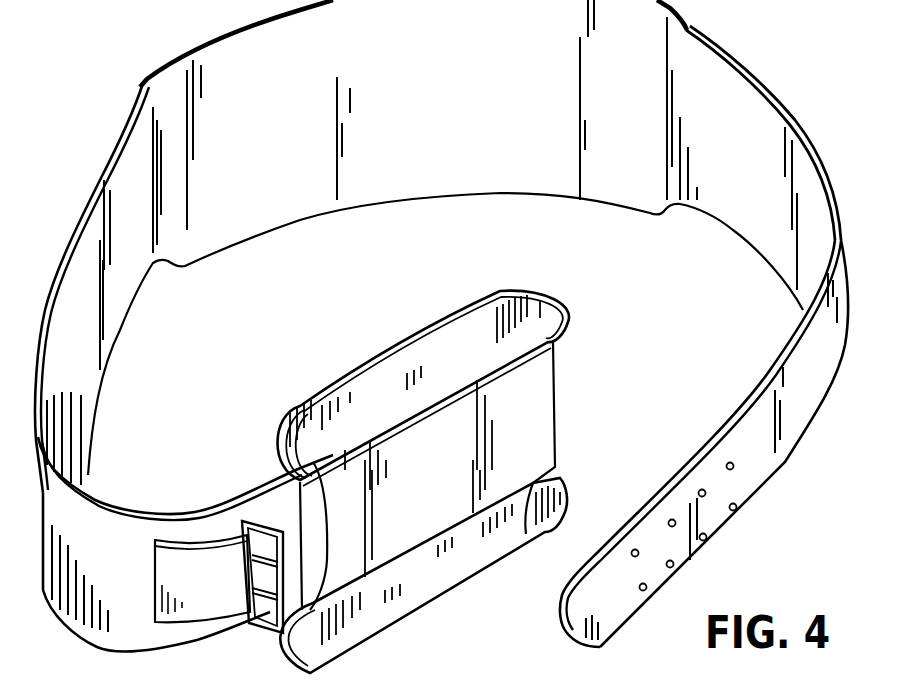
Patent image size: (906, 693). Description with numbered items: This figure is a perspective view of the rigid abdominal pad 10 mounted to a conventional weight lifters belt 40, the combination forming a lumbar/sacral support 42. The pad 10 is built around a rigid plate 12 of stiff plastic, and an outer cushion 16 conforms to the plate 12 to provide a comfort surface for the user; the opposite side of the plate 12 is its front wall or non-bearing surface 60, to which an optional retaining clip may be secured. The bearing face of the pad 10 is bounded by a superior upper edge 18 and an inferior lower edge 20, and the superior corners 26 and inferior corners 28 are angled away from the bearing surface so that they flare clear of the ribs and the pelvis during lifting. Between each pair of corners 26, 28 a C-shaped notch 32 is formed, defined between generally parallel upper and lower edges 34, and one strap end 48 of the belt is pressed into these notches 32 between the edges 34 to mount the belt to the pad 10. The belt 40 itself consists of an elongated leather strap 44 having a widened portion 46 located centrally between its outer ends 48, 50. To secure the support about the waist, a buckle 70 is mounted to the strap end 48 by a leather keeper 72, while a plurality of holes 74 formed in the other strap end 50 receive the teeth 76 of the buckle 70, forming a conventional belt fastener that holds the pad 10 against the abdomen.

The rigid abdominal pad 10 is at (425, 469).
The rigid plate 12 is at (424, 385).
The outer cushion 16 is at (276, 467).
The upper edge 18 is at (477, 300).
The lower edge 20 is at (466, 593).
The superior corners 26 is at (568, 310).
The inferior corners 28 is at (565, 507).
The C-shaped notches 32 is at (526, 535).
The upper and lower edges of notch 34 is at (565, 343).
The weight lifters belt 40 is at (762, 66).
The lumbar/sacral support 42 is at (180, 31).
The leather strap 44 is at (237, 258).
The widened portion 46 is at (415, 74).
The strap end 48 is at (210, 633).
The strap end 50 is at (735, 523).
The front wall or non-bearing surface 60 is at (430, 580).
The buckle 70 is at (292, 540).
The leather keeper 72 is at (202, 578).
The holes 74 is at (735, 503).
The teeth 76 is at (276, 594).